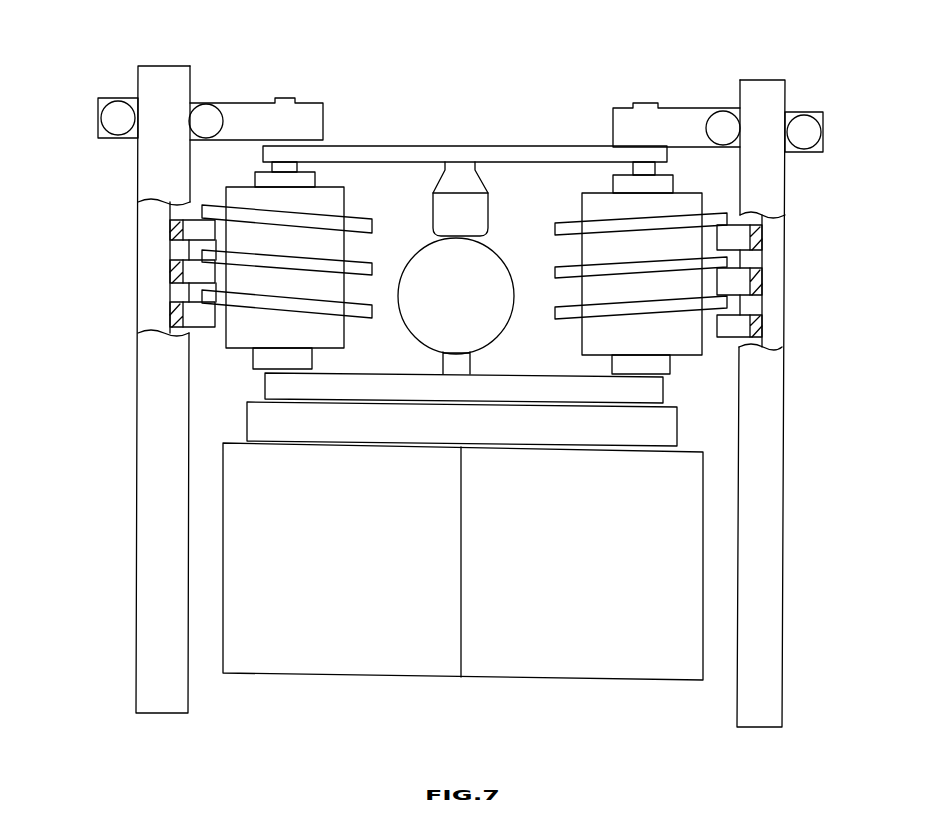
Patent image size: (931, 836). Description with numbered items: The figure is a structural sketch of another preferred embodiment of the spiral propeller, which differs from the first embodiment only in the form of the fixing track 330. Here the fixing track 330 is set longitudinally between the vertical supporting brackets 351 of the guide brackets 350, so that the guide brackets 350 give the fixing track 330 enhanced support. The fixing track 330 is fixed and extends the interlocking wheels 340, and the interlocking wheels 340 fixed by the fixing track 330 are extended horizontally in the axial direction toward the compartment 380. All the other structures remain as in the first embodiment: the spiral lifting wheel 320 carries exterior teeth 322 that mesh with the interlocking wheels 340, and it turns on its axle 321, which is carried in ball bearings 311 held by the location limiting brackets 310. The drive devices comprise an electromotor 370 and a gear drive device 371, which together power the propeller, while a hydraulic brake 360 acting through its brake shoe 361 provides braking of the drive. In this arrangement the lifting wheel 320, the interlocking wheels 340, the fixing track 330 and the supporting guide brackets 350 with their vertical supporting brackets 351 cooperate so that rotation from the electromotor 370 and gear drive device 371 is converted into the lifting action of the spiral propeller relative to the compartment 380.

The location limiting bracket 310 is at (98, 110).
The ball bearing 311 is at (118, 127).
The spiral lifting wheel 320 is at (327, 200).
The axle of the spiral lifting wheel 321 is at (282, 166).
The exterior teeth of the spiral lifting wheel 322 is at (212, 212).
The fixing track 330 is at (170, 232).
The interlocking wheel 340 is at (175, 291).
The guide bracket 350 is at (163, 422).
The vertical supporting bracket 351 is at (172, 330).
The hydraulic brake 360 is at (467, 180).
The brake shoe 361 is at (418, 157).
The electromotor 370 is at (477, 277).
The gear drive device 371 is at (650, 390).
The compartment 380 is at (665, 540).